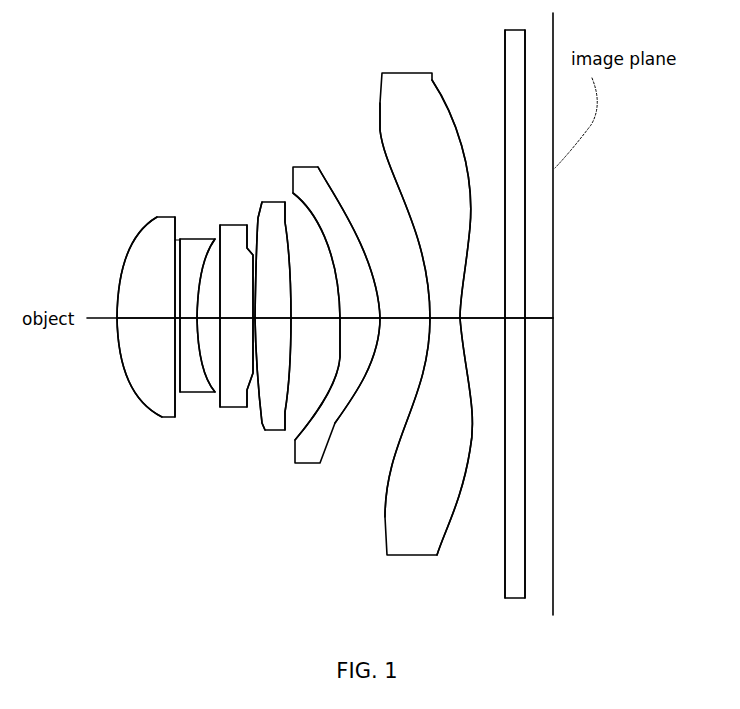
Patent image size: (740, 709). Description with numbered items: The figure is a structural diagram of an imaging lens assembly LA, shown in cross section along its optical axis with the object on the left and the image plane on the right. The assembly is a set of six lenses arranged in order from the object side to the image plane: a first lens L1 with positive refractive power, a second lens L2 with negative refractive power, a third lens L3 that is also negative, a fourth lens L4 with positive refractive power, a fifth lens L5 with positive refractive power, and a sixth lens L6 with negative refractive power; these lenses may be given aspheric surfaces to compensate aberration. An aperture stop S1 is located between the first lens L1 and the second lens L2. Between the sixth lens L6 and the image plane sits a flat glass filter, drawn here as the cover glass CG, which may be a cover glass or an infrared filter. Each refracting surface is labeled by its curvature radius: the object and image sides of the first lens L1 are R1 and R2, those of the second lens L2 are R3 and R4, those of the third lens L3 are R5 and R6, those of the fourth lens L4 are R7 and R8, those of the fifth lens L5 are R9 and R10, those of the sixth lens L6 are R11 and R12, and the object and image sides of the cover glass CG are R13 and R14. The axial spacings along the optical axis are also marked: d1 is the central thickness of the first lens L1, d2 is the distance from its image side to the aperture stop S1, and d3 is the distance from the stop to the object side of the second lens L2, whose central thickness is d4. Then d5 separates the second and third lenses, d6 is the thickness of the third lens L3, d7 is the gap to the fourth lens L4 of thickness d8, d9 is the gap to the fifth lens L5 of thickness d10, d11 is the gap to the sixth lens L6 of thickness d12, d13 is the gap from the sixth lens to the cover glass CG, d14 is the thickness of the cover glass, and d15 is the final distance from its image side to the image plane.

The imaging lens assembly LA is at (146, 101).
The first lens L1 is at (146, 317).
The second lens L2 is at (197, 315).
The third lens L3 is at (236, 316).
The fourth lens L4 is at (273, 316).
The fifth lens L5 is at (336, 315).
The sixth lens L6 is at (426, 314).
The aperture stop S1 is at (176, 244).
The cover glass CG is at (515, 314).
The curvature radius of the object side of the first lens R1 is at (117, 332).
The curvature radius of the image side of the first lens R2 is at (173, 333).
The curvature radius of the object side of the second lens R3 is at (175, 332).
The curvature radius of the image side of the second lens R4 is at (200, 337).
The curvature radius of the object side of the third lens R5 is at (222, 342).
The curvature radius of the image side of the third lens R6 is at (247, 337).
The curvature radius of the object side of the fourth lens R7 is at (255, 343).
The curvature radius of the image side of the fourth lens R8 is at (287, 353).
The curvature radius of the object side of the fifth lens R9 is at (333, 347).
The curvature radius of the image side of the fifth lens R10 is at (360, 353).
The curvature radius of the object side of the sixth lens R11 is at (423, 353).
The curvature radius of the image side of the sixth lens R12 is at (467, 377).
The curvature radius of the object side of the glass filter R13 is at (507, 433).
The curvature radius of the image side of the glass filter R14 is at (525, 458).
The central thickness of the first lens d1 is at (146, 312).
The axial distance between the image side of the first lens and the aperture stop d2 is at (172, 316).
The axial distance between the aperture stop and the object side of the second lens d3 is at (176, 316).
The central thickness of the second lens d4 is at (188, 312).
The axial distance between the second lens and the third lens d5 is at (208, 312).
The central thickness of the third lens d6 is at (236, 312).
The axial distance between the third lens and the fourth lens d7 is at (254, 314).
The central thickness of the fourth lens d8 is at (273, 312).
The axial distance between the fourth lens and the fifth lens d9 is at (315, 311).
The central thickness of the fifth lens d10 is at (360, 311).
The axial distance between the fifth lens and the sixth lens d11 is at (405, 311).
The central thickness of the sixth lens d12 is at (445, 310).
The axial distance between the sixth lens and the glass filter d13 is at (482, 310).
The central thickness of the glass filter d14 is at (514, 314).
The axial distance between the glass filter and the image plane d15 is at (539, 310).